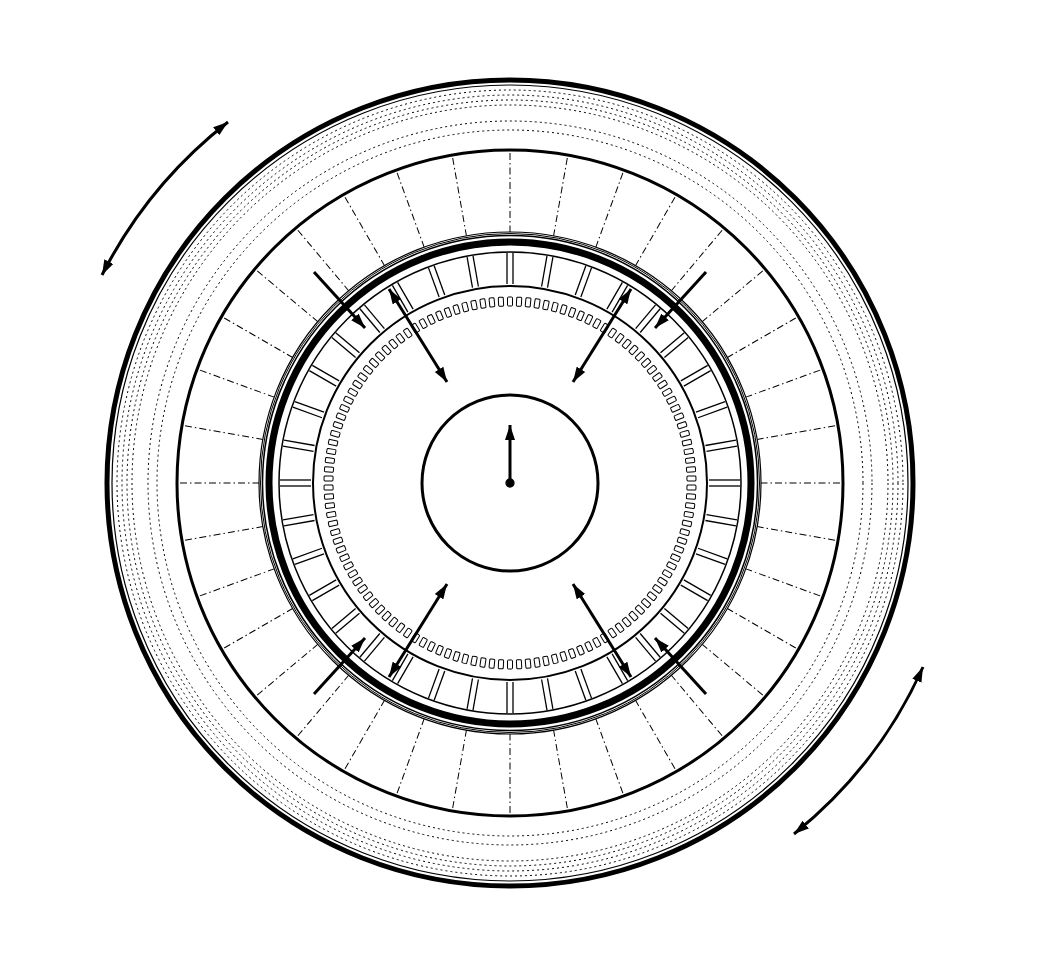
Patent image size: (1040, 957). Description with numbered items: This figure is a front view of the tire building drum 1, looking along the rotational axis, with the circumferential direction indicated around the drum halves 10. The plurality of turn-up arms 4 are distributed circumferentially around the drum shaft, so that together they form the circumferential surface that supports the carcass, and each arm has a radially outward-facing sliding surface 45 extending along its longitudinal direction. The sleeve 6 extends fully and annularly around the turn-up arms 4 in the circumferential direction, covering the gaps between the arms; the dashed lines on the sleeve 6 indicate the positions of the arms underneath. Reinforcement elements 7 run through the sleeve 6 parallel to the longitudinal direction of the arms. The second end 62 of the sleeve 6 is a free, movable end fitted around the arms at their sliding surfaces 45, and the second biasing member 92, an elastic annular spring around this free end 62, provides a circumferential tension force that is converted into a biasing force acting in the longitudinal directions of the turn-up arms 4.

The tire building drum 1 is at (867, 210).
The drum halves 10 is at (867, 210).
The turn-up arms 4 is at (758, 488).
The sleeve 6 is at (381, 196).
The reinforcement elements 7 is at (412, 188).
The sliding surface 45 is at (552, 270).
The second end 62 is at (643, 281).
The second biasing member 92 is at (293, 606).